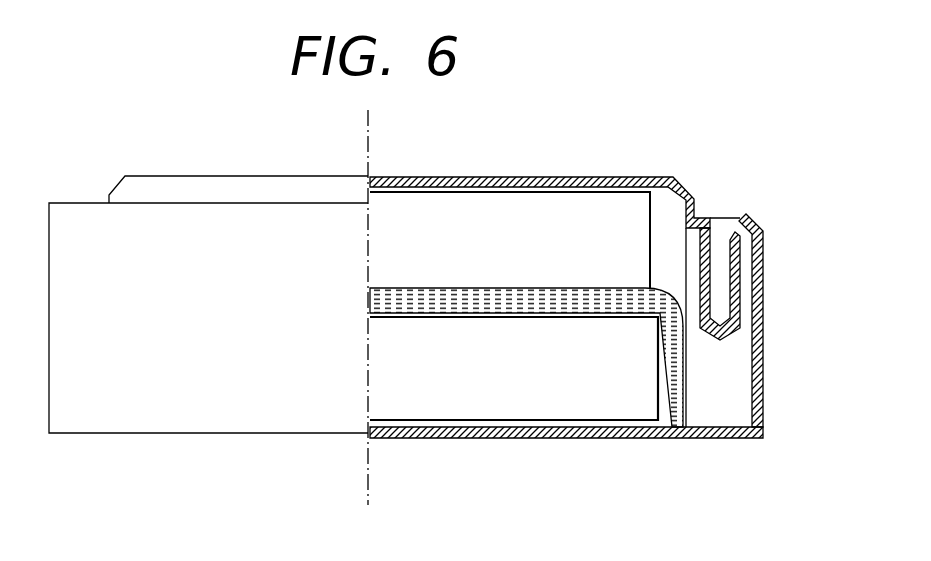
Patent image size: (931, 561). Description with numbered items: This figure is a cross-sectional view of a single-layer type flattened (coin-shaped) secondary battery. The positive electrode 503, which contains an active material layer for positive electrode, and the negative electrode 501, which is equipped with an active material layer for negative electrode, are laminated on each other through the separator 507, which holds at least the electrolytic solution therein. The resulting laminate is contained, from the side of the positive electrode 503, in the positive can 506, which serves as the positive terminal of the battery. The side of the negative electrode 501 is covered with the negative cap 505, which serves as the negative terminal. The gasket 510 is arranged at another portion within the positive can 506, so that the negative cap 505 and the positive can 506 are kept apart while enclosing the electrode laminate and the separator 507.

The negative electrode 501 is at (495, 222).
The positive electrode 503 is at (567, 405).
The negative cap 505 is at (412, 177).
The positive can 506 is at (426, 438).
The separator 507 is at (586, 300).
The gasket 510 is at (745, 333).